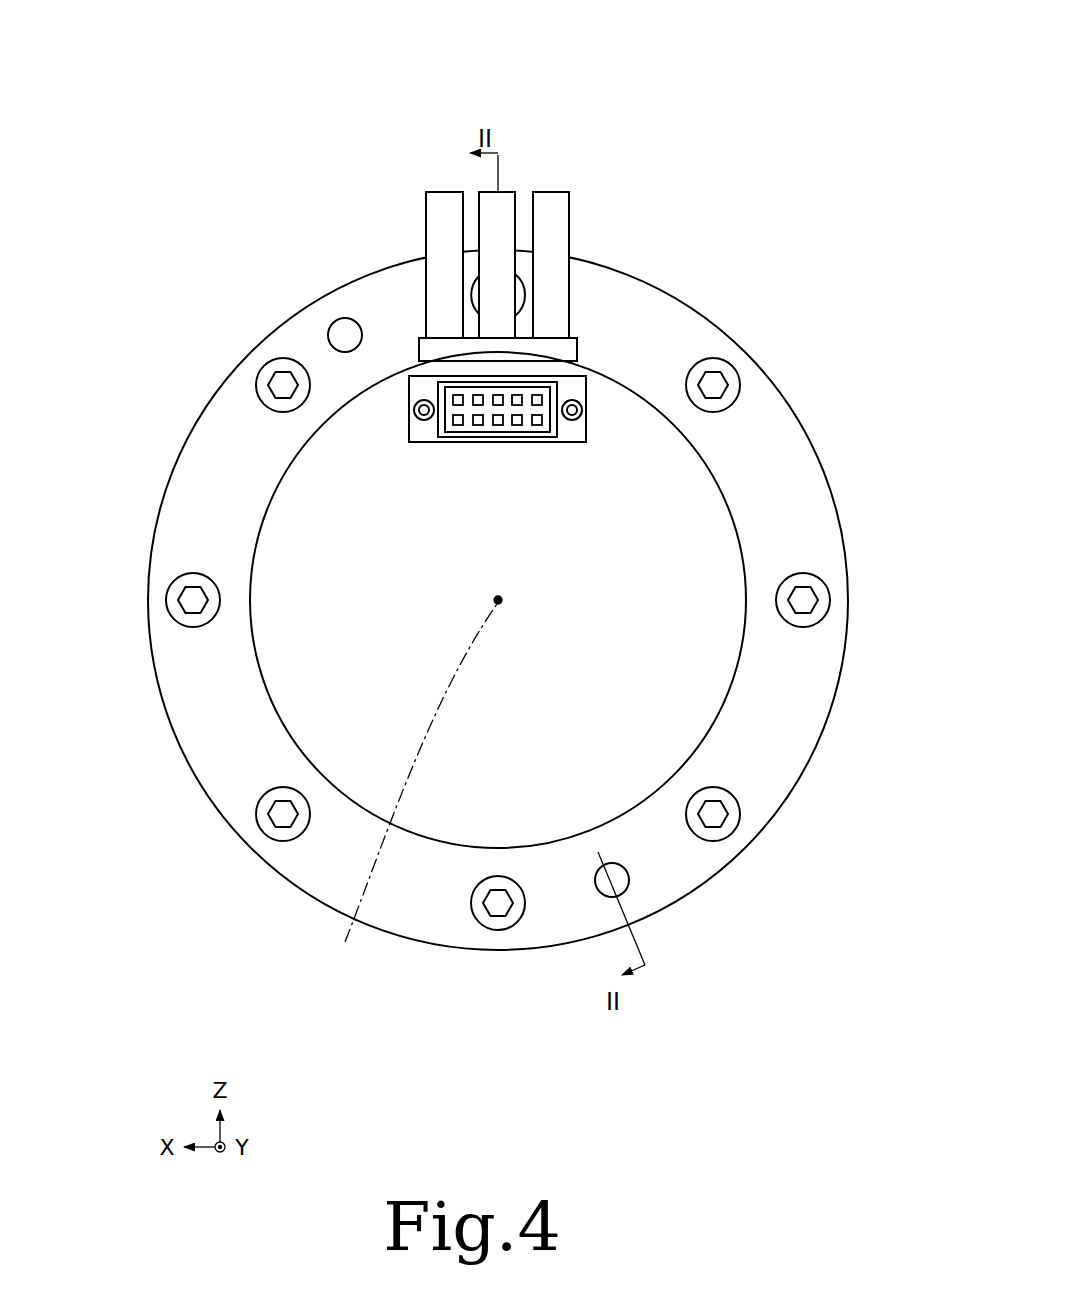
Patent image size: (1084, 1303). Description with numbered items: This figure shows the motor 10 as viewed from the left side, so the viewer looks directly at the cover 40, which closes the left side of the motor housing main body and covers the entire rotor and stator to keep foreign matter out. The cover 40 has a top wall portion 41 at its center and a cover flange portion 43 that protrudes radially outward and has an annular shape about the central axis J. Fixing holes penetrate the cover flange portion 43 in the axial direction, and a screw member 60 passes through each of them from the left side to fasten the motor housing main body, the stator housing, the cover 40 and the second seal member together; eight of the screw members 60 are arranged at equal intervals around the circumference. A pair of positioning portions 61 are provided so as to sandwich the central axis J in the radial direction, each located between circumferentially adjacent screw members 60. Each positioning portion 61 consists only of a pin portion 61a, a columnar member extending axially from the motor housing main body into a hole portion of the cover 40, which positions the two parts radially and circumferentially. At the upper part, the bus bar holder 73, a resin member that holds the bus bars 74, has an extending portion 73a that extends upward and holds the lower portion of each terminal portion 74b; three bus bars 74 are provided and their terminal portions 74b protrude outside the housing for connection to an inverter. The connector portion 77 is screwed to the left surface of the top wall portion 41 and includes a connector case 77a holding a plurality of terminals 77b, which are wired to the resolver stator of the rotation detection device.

The motor 10 is at (773, 76).
The cover 40 is at (662, 280).
The top wall portion 41 is at (693, 678).
The cover flange portion 43 is at (802, 495).
The screw member 60 is at (512, 288).
The positioning portion 61 is at (360, 318).
The pin portion 61a is at (343, 333).
The bus bar holder 73 is at (414, 356).
The extending portion 73a is at (577, 345).
The bus bar 74 is at (436, 186).
The terminal portion 74b is at (573, 200).
The connector portion 77 is at (418, 449).
The connector case 77a is at (578, 392).
The terminal 77b is at (498, 427).
The central axis J is at (409, 781).